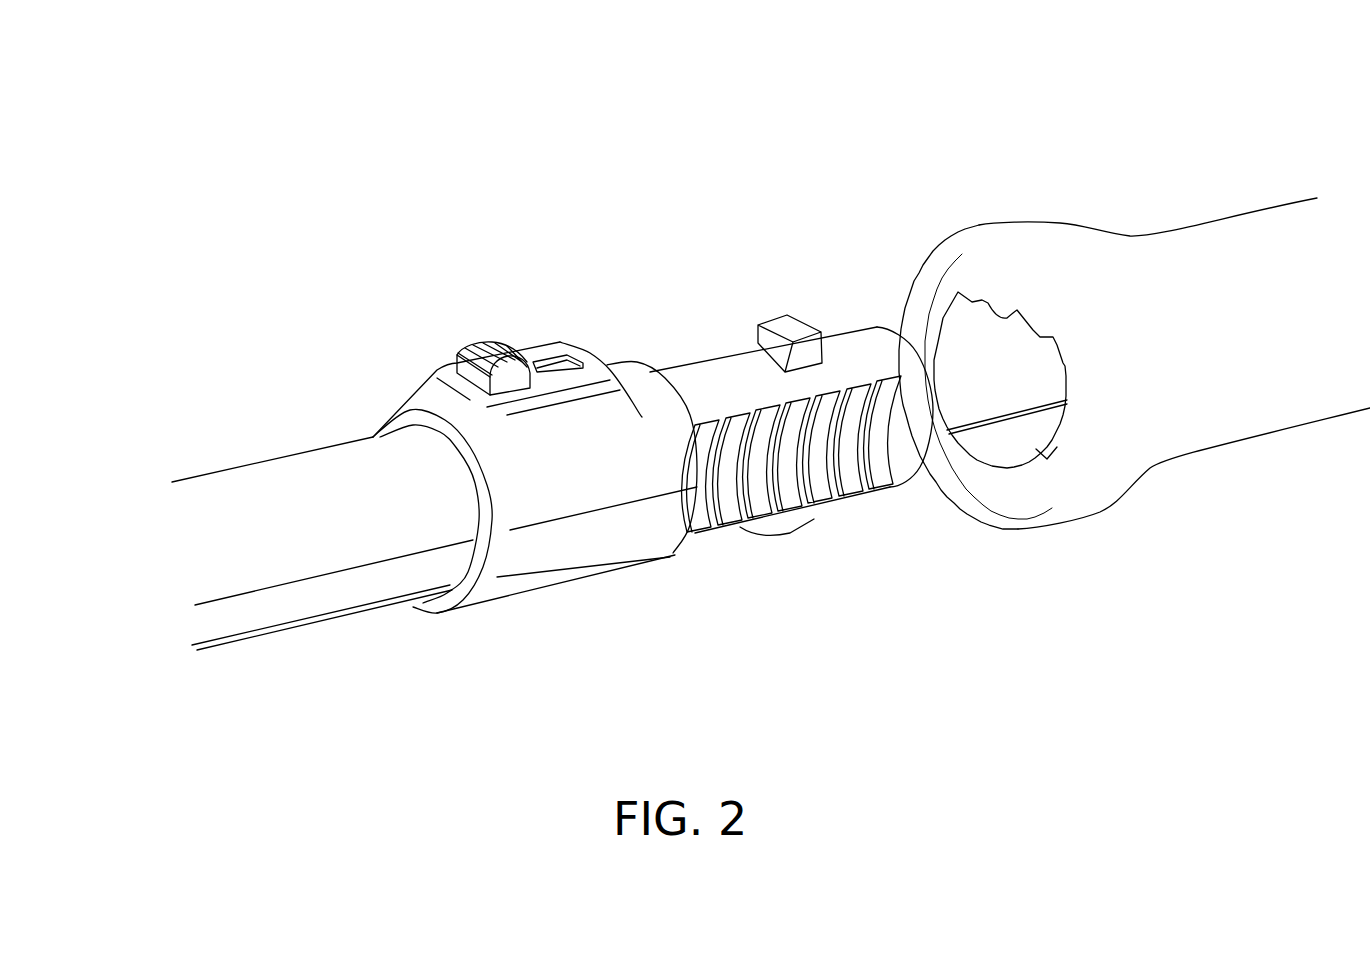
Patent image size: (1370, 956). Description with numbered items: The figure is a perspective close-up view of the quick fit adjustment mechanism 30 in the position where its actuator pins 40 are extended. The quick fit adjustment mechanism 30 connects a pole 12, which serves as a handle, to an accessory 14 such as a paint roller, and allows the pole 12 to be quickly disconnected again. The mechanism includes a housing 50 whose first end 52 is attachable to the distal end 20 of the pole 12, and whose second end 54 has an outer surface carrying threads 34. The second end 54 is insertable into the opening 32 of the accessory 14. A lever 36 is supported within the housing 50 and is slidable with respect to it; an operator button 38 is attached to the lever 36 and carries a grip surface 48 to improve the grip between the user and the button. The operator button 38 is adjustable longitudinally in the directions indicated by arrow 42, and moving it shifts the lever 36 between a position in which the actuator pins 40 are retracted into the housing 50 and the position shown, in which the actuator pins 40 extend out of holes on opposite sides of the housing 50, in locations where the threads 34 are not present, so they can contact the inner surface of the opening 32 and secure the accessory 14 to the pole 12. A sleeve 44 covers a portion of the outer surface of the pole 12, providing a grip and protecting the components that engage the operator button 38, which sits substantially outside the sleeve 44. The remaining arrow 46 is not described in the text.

The pole 12 is at (300, 600).
The accessory 14 is at (1134, 337).
The distal end 20 is at (631, 489).
The quick fit adjustment mechanism 30 is at (338, 148).
The opening 32 is at (990, 313).
The threads 34 is at (740, 495).
The lever 36 is at (295, 293).
The operator button 38 is at (473, 338).
The actuator pins 40 is at (817, 327).
The arrow 42 is at (543, 312).
The sleeve 44 is at (533, 552).
The engagement direction 46 is at (792, 296).
The grip surface 48 is at (457, 355).
The housing 50 is at (562, 148).
The first end 52 is at (585, 273).
The second end 54 is at (880, 585).